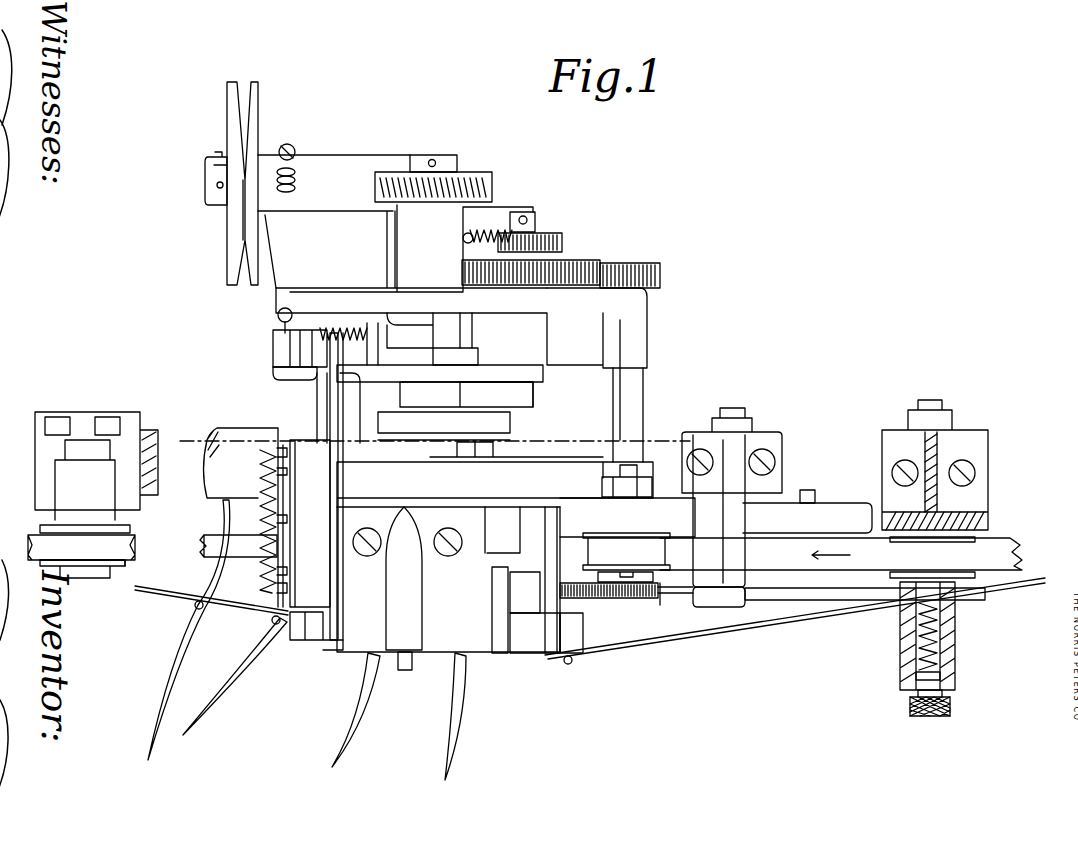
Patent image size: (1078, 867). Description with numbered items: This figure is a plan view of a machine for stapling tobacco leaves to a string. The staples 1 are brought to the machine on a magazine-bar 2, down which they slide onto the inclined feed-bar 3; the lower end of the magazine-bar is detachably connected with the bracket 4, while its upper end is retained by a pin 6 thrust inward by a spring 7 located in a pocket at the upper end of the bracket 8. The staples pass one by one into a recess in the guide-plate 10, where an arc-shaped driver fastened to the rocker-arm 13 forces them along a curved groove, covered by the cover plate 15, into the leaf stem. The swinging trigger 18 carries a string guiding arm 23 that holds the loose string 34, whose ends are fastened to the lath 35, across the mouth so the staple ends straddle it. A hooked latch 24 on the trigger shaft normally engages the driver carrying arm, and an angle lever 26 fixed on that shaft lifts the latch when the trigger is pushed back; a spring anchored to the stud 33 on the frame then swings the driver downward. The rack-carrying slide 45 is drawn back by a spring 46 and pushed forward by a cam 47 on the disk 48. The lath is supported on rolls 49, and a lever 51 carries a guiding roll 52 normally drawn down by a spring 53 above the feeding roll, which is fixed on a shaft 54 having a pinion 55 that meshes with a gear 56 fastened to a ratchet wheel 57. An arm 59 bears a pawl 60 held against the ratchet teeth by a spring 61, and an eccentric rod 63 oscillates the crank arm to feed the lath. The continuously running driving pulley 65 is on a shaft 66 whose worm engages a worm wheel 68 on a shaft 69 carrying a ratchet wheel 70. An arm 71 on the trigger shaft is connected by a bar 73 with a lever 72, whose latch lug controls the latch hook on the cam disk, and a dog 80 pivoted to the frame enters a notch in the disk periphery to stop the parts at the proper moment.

The staples 1 is at (625, 602).
The magazine-bar 2 is at (812, 605).
The feed-bar 3 is at (672, 595).
The bracket 4 is at (775, 635).
The pin 6 is at (952, 703).
The spring 7 is at (955, 662).
The bracket 8 is at (990, 497).
The guide-plate 10 is at (560, 520).
The rocker-arm 13 is at (523, 627).
The cover plate 15 is at (560, 603).
The swinging trigger 18 is at (583, 632).
The string guiding arm 23 is at (575, 664).
The latch 24 is at (525, 592).
The angle lever 26 is at (490, 588).
The stud 33 is at (412, 668).
The string 34 is at (150, 602).
The lath 35 is at (205, 540).
The slide 45 is at (290, 406).
The spring 46 is at (282, 514).
The cam 47 is at (352, 398).
The disk 48 is at (545, 372).
The rolls 49 is at (120, 575).
The lever 51 is at (808, 498).
The guiding roll 52 is at (662, 602).
The spring 53 is at (620, 465).
The shaft 54 is at (645, 396).
The pinion 55 is at (662, 277).
The gear 56 is at (578, 262).
The ratchet wheel 57 is at (548, 232).
The arm 59 is at (483, 210).
The pawl 60 is at (468, 245).
The spring 61 is at (505, 230).
The eccentric rod 63 is at (533, 405).
The driving pulley 65 is at (262, 98).
The shaft 66 is at (217, 170).
The worm wheel 68 is at (450, 165).
The shaft 69 is at (425, 152).
The ratchet wheel 70 is at (455, 350).
The arm 71 is at (315, 642).
The lever 72 is at (318, 340).
The bar 73 is at (343, 580).
The dog 80 is at (273, 375).